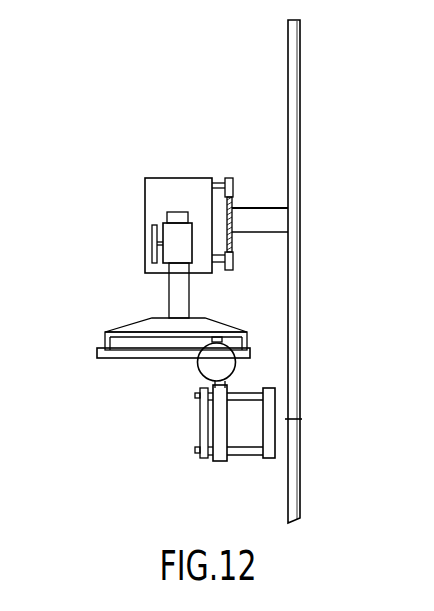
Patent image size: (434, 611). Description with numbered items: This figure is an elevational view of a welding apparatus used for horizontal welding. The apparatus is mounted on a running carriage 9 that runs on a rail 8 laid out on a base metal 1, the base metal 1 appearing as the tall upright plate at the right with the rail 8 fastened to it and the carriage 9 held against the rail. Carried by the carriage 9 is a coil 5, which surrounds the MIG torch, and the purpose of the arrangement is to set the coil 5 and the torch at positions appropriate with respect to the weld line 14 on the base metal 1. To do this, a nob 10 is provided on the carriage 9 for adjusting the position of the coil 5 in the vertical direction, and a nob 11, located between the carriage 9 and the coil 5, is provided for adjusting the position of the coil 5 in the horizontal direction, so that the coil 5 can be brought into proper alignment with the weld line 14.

The base metal 1 is at (293, 70).
The coil 5 is at (263, 462).
The rail 8 is at (232, 202).
The running carriage 9 is at (178, 183).
The nob 10 is at (153, 245).
The nob 11 is at (205, 365).
The weld line 14 is at (302, 419).